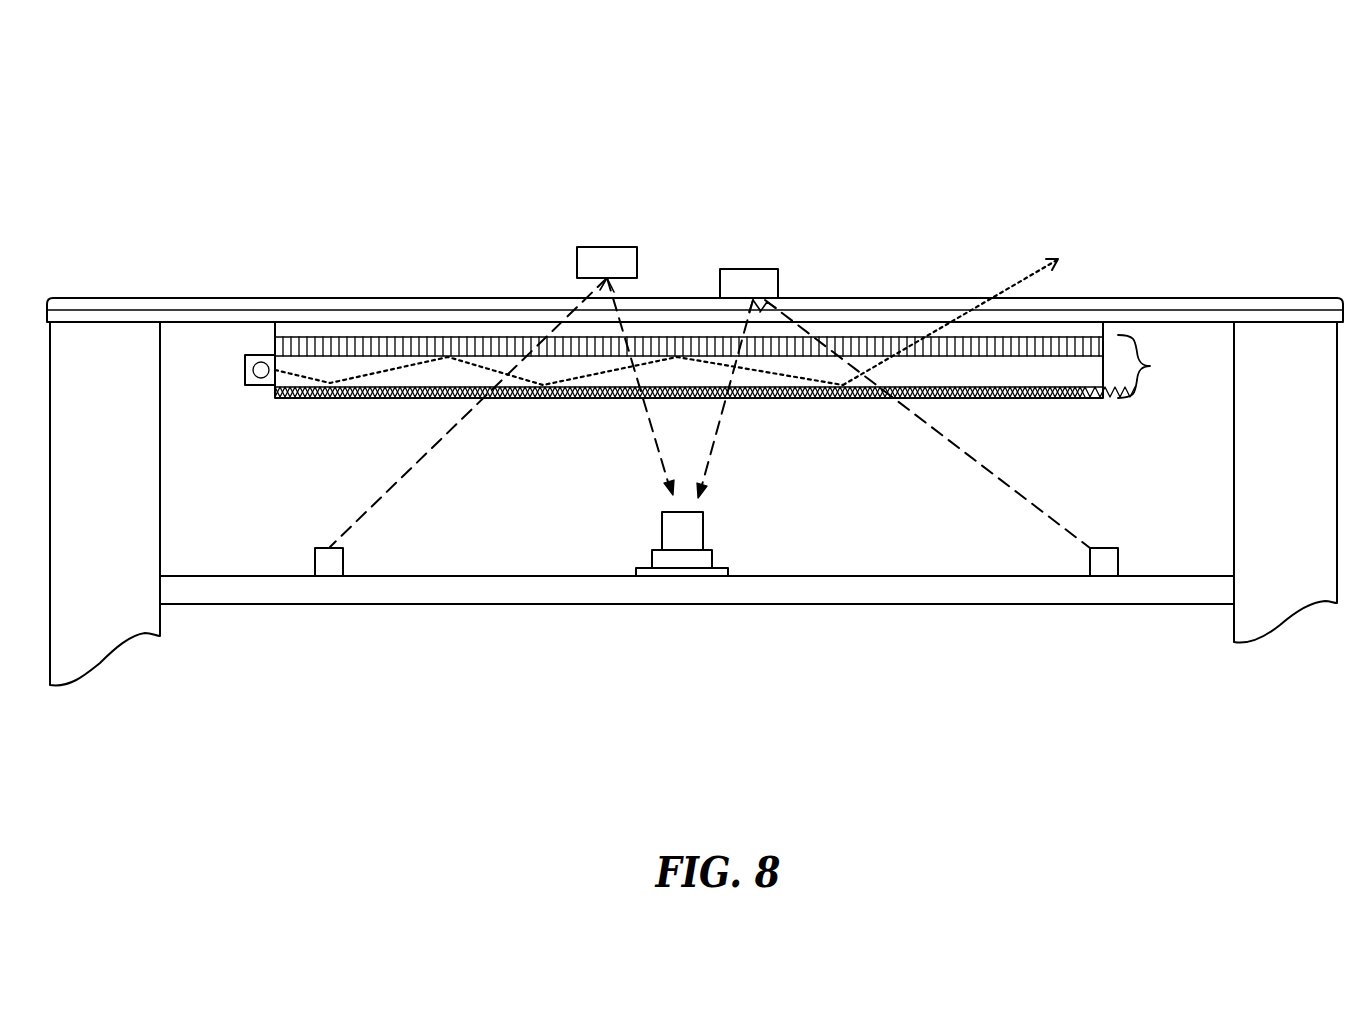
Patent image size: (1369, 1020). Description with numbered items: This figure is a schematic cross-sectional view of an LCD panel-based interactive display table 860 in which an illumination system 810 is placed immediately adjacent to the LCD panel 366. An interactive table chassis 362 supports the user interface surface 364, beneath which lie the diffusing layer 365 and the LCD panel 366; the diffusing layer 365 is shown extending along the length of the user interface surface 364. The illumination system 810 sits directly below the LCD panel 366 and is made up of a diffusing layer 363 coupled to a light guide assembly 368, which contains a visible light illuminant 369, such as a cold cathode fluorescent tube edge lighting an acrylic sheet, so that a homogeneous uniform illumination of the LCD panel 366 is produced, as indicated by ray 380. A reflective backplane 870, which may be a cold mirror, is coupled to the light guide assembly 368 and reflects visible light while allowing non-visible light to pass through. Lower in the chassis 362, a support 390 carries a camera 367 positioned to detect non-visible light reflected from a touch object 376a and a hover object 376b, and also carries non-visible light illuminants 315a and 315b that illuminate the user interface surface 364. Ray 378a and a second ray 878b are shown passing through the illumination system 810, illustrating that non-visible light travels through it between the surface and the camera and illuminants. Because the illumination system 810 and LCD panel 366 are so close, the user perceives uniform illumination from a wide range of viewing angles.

The interactive display table 860 is at (214, 146).
The user interface surface 364 is at (125, 296).
The diffusing layer 365 is at (1075, 320).
The interactive table chassis 362 is at (160, 618).
The support 390 is at (775, 605).
The illumination system 810 is at (740, 361).
The LCD panel 366 is at (323, 328).
The diffusing layer 363 is at (427, 337).
The light guide assembly 368 is at (358, 395).
The reflective backplane 870 is at (588, 398).
The ray 380 is at (1010, 285).
The visible light illuminant 369 is at (245, 370).
The hover object 376b is at (590, 247).
The touch object 376a is at (728, 269).
The ray 378a is at (415, 468).
The light ray 878b is at (963, 455).
The camera 367 is at (703, 520).
The non-visible light illuminant 315a is at (348, 550).
The non-visible light illuminant 315b is at (1087, 557).